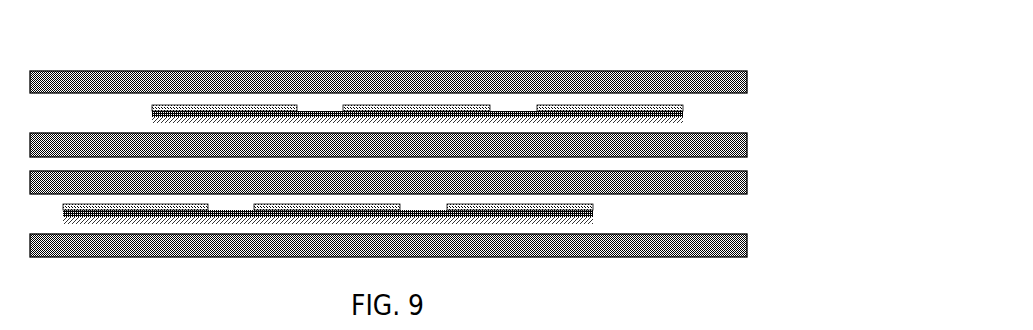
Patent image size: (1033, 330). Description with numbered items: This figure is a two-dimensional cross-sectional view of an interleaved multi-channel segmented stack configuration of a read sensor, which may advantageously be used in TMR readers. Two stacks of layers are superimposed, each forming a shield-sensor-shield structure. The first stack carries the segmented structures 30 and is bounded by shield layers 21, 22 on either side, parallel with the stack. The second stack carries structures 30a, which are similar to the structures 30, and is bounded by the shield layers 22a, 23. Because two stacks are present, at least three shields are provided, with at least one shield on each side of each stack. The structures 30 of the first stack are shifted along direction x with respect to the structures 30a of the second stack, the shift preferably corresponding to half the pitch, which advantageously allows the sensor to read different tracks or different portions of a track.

The shield layer 21 is at (311, 72).
The shield layer 22 is at (702, 135).
The shield layer 22a is at (682, 185).
The shield layer 23 is at (526, 243).
The structures 30 is at (561, 103).
The structures 30a is at (594, 214).